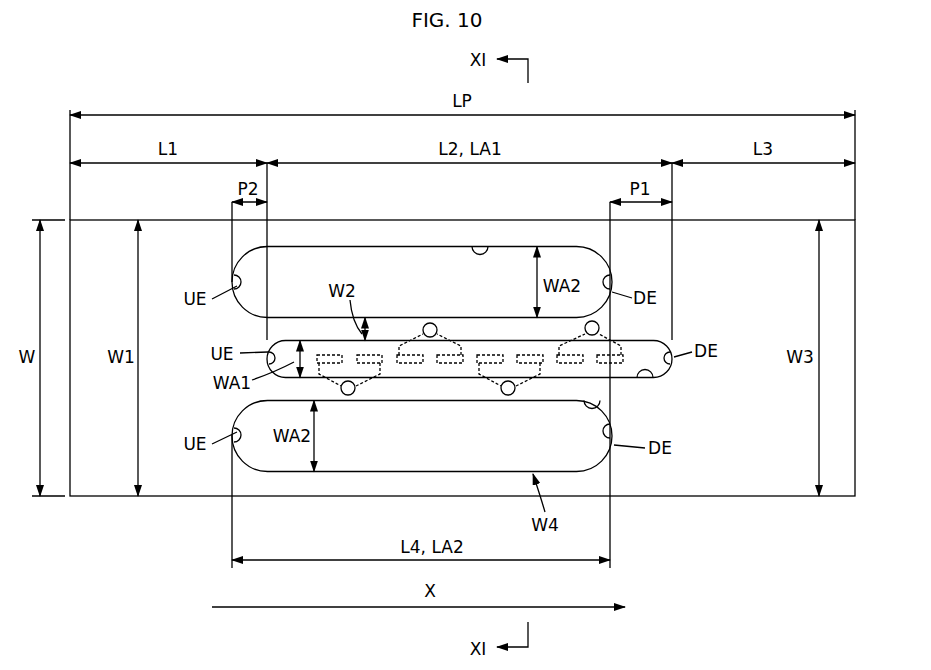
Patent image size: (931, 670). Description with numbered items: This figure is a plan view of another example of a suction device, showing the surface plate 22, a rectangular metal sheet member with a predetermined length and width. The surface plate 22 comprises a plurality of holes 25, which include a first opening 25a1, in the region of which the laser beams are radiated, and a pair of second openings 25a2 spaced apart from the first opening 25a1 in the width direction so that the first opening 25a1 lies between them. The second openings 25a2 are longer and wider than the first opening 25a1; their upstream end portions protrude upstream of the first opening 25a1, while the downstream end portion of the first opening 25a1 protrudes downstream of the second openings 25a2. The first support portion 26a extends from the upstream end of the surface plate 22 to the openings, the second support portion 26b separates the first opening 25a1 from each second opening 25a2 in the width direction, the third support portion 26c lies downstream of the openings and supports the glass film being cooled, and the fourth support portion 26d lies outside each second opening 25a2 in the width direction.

The surface plate 22 is at (169, 516).
The holes 25 is at (315, 264).
The first opening 25a1 is at (652, 378).
The second openings 25a2 is at (481, 246).
The first support portion 26a is at (107, 498).
The second support portion 26b is at (481, 326).
The third support portion 26c is at (790, 498).
The fourth support portion 26d is at (398, 233).